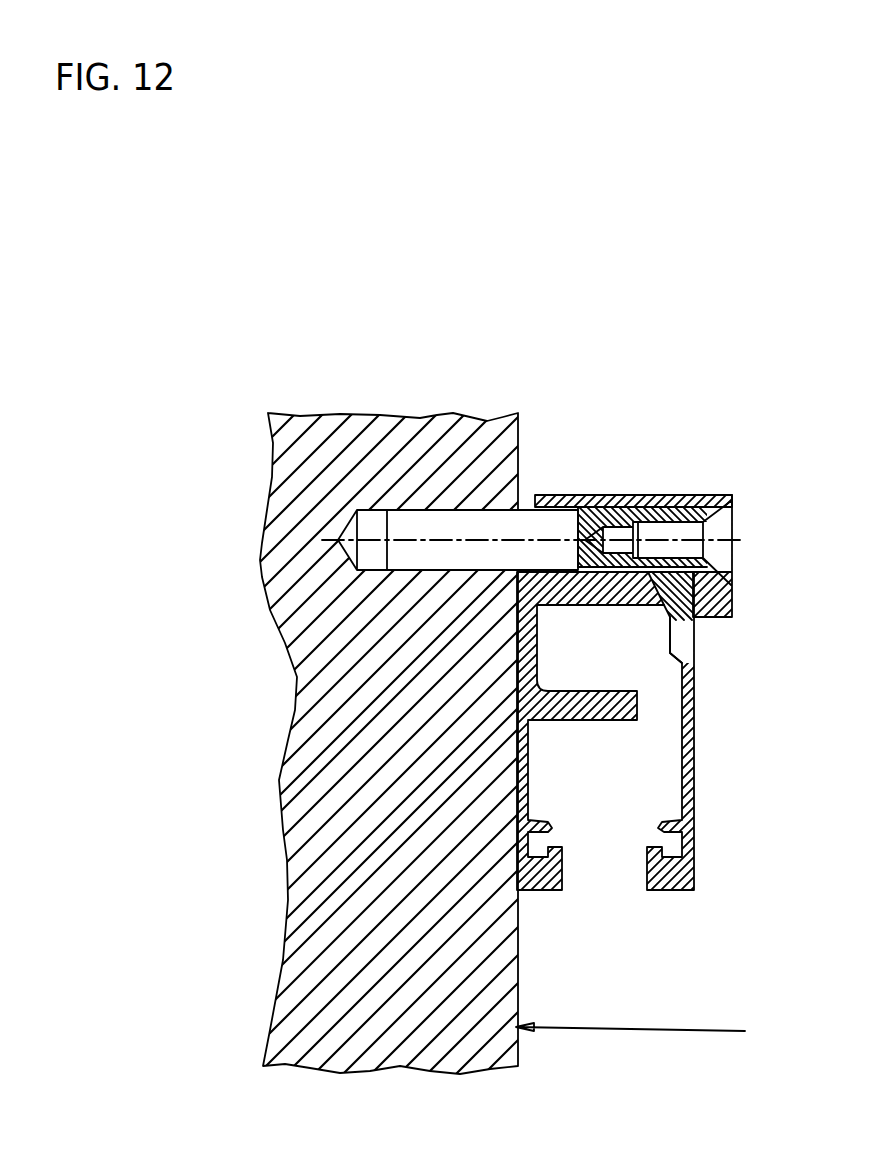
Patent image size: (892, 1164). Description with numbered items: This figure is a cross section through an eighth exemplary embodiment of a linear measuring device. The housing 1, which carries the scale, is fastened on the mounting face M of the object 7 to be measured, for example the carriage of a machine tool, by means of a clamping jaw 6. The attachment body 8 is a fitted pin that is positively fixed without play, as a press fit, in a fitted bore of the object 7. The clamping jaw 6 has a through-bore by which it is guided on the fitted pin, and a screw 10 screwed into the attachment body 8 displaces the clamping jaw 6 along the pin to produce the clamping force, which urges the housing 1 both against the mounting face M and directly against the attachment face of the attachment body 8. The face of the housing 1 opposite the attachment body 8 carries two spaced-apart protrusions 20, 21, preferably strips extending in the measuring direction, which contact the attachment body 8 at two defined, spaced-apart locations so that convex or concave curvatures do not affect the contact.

The housing 1 is at (697, 874).
The clamping jaw 6 is at (646, 510).
The object to be measured 7 is at (327, 968).
The attachment body 8 is at (473, 527).
The screw 10 is at (728, 520).
The protrusion 20 is at (687, 626).
The protrusion 21 is at (565, 605).
The mounting face M is at (651, 1039).